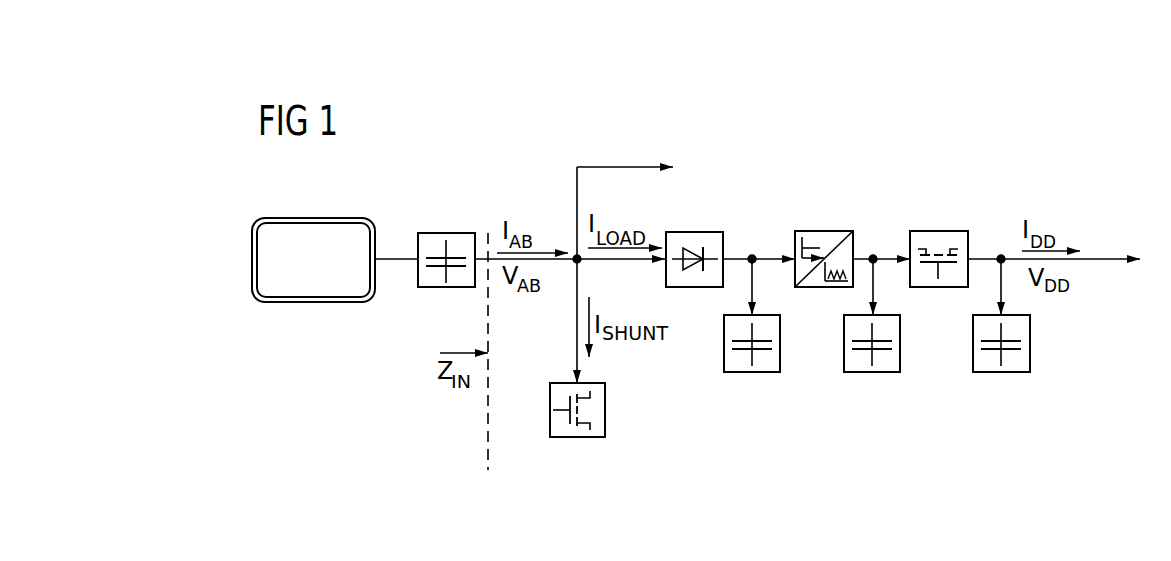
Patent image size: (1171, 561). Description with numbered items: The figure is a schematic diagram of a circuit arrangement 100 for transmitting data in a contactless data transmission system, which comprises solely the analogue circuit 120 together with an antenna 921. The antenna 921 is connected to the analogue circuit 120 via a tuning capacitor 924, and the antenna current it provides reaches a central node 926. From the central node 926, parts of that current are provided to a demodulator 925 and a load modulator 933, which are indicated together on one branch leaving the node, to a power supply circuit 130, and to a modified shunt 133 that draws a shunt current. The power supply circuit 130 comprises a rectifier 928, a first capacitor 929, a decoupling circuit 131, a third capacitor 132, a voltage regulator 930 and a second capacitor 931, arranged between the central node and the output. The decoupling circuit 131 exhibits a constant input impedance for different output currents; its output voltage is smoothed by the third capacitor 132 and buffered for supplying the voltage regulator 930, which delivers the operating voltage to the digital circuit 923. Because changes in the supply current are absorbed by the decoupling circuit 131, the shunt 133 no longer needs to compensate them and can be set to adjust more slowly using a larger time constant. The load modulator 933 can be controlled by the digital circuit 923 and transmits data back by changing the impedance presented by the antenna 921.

The circuit arrangement 100 is at (1010, 183).
The analogue circuit 120 is at (1048, 481).
The power supply circuit 130 is at (1048, 432).
The decoupling circuit 131 is at (823, 231).
The third capacitor 132 is at (872, 372).
The modified shunt 133 is at (605, 410).
The antenna 921 is at (315, 218).
The digital circuit 923 is at (1110, 258).
The tuning capacitor 924 is at (447, 233).
The demodulator 925 is at (625, 260).
The load modulator 933 is at (625, 260).
The central node 926 is at (575, 257).
The rectifier 928 is at (695, 232).
The first capacitor 929 is at (752, 372).
The voltage regulator 930 is at (938, 231).
The second capacitor 931 is at (1001, 372).